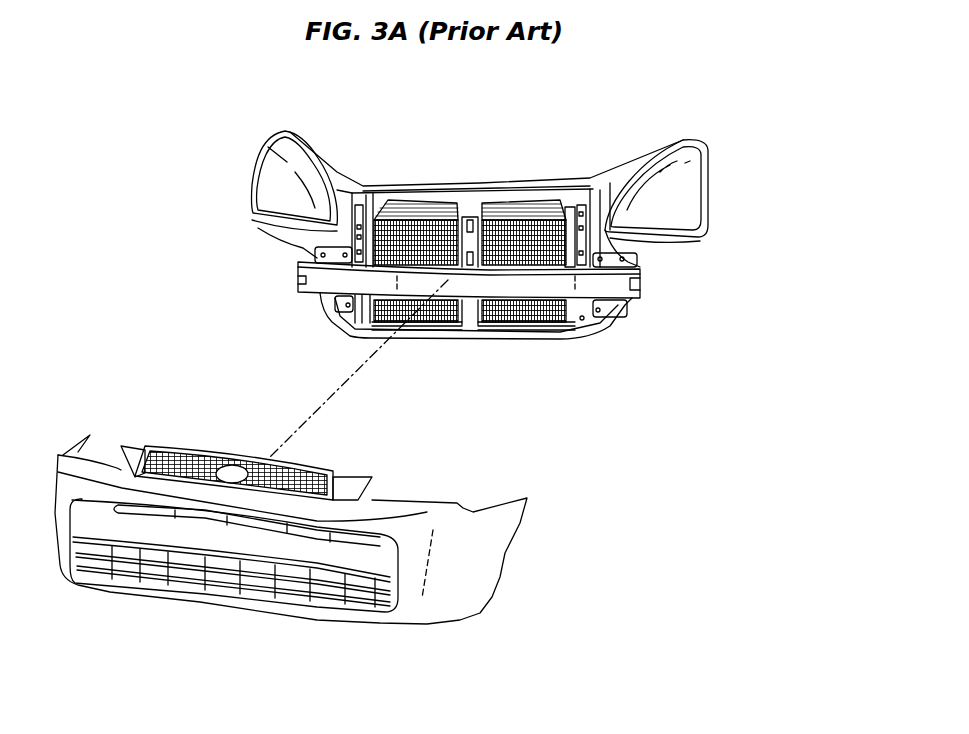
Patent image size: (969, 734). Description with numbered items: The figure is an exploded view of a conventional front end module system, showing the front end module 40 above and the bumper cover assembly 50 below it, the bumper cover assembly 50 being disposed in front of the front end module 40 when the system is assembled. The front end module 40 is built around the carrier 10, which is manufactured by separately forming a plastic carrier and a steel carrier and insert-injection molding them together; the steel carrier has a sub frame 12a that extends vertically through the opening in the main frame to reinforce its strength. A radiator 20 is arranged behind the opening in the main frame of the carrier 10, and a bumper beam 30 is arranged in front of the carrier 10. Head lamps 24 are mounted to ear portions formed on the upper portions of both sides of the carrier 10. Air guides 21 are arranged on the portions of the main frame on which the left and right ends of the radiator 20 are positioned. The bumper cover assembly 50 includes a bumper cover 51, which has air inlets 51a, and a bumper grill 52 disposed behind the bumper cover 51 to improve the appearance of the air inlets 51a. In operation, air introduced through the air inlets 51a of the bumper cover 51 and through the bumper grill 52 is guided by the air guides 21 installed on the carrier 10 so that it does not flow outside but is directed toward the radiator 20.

The carrier 10 is at (385, 190).
The sub frame 12a is at (470, 215).
The air guides 21 is at (355, 232).
The head lamps 24 is at (705, 175).
The front end module 40 is at (314, 327).
The radiator 20 is at (443, 310).
The bumper beam 30 is at (535, 290).
The bumper cover assembly 50 is at (331, 527).
The bumper cover 51 is at (478, 572).
The air inlets 51a is at (207, 567).
The bumper grill 52 is at (195, 452).